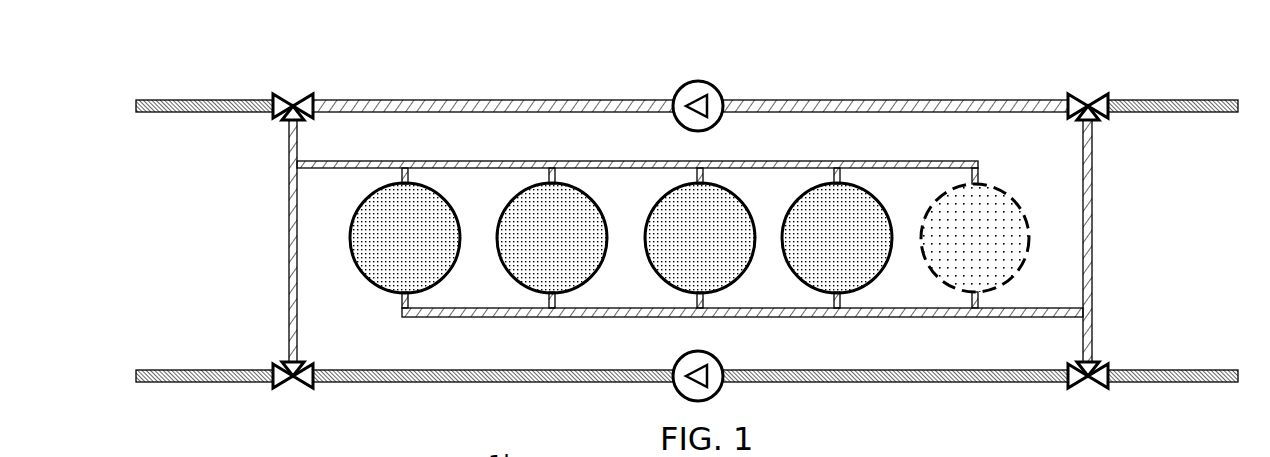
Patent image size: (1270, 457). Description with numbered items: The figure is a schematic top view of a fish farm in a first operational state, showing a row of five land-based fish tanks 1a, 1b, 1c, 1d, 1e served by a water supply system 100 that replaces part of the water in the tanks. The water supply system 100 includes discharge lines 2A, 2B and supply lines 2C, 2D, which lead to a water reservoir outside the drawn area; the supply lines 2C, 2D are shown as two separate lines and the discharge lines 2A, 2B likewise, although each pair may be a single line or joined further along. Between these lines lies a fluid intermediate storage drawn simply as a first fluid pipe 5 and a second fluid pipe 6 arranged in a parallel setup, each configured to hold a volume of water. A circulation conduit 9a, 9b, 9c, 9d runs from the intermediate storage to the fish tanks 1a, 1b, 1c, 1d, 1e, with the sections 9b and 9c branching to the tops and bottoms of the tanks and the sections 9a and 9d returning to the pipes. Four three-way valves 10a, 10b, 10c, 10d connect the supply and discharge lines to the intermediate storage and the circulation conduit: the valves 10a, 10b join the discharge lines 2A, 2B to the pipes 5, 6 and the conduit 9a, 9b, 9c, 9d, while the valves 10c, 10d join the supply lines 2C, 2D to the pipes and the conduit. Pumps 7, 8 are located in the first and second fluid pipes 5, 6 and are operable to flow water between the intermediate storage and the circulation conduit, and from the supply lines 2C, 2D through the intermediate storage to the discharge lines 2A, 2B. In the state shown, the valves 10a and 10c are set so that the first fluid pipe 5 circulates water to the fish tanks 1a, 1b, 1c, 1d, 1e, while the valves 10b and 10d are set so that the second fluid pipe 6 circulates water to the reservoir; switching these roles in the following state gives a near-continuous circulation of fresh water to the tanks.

The water supply system 100 is at (1003, 68).
The fish tank 1a is at (364, 282).
The fish tank 1b is at (511, 280).
The fish tank 1c is at (657, 279).
The fish tank 1d is at (797, 279).
The fish tank 1e is at (1020, 270).
The discharge line 2A is at (185, 100).
The discharge line 2B is at (166, 370).
The supply line 2C is at (1190, 100).
The supply line 2D is at (1200, 370).
The first fluid pipe 5 is at (568, 100).
The second fluid pipe 6 is at (520, 383).
The pump 7 is at (720, 93).
The pump 8 is at (721, 363).
The circulation conduit 9a is at (289, 272).
The circulation conduit 9b is at (484, 161).
The circulation conduit 9c is at (580, 317).
The circulation conduit 9d is at (1092, 272).
The three-way valve 10a is at (291, 100).
The three-way valve 10b is at (285, 385).
The three-way valve 10c is at (1086, 100).
The three-way valve 10d is at (1094, 385).